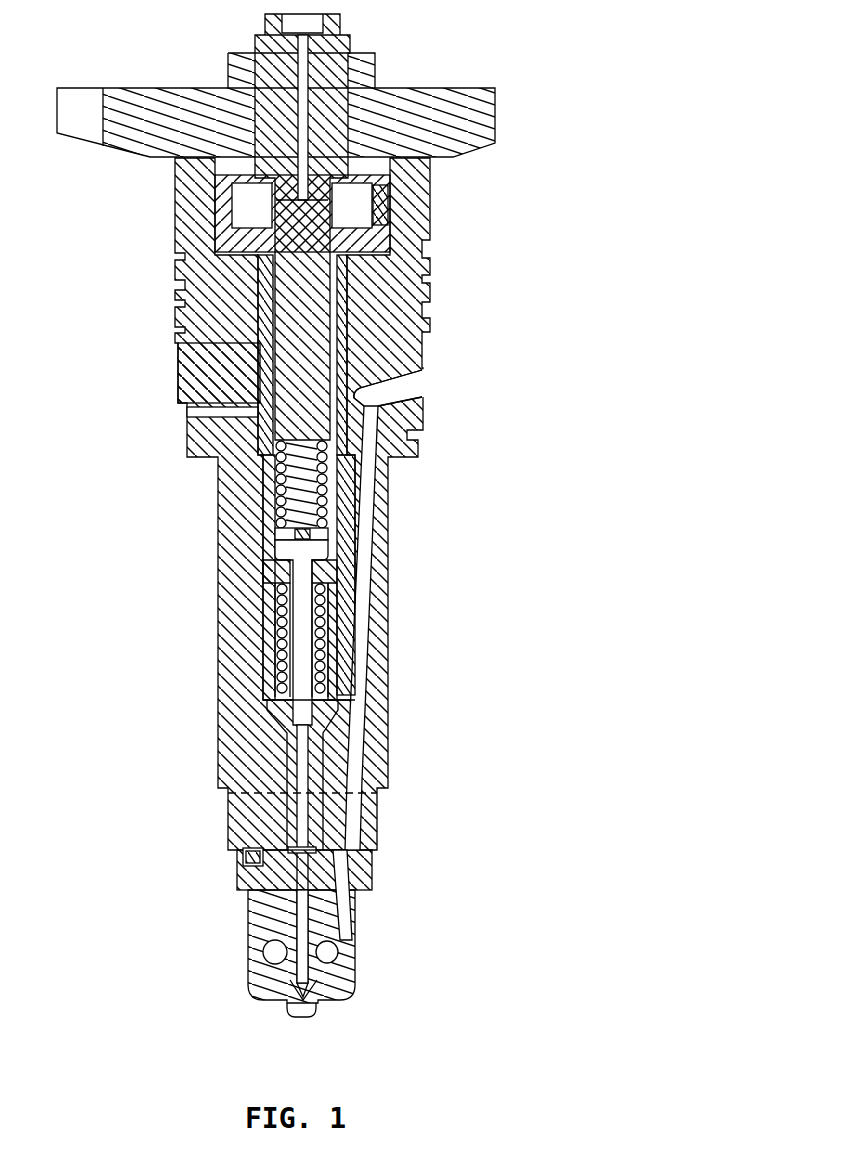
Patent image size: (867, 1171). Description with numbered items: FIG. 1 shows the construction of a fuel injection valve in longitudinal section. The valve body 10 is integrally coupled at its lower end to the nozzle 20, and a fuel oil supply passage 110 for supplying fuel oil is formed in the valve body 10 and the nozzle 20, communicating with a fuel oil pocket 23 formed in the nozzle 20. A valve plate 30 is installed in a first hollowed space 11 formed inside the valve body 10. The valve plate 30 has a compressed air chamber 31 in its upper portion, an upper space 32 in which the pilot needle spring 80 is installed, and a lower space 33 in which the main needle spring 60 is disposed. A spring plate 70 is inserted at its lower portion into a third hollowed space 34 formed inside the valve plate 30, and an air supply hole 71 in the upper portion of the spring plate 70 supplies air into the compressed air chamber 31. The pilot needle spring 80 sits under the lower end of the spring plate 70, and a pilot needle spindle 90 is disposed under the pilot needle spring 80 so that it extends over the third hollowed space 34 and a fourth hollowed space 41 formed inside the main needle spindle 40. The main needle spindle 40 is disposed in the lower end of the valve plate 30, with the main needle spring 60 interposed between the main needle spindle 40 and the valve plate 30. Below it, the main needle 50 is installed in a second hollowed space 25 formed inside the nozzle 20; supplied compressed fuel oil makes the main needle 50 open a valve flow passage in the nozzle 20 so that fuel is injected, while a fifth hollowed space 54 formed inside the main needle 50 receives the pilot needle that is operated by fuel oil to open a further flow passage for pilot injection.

The valve body 10 is at (397, 423).
The first hollowed space 11 is at (343, 530).
The nozzle 20 is at (233, 888).
The fuel oil pocket 23 is at (282, 953).
The second hollowed space 25 is at (280, 917).
The valve plate 30 is at (403, 390).
The compressed air chamber 31 is at (245, 215).
The upper space 32 is at (345, 478).
The lower space 33 is at (307, 597).
The third hollowed space 34 is at (270, 350).
The main needle spindle 40 is at (267, 703).
The fourth hollowed space 41 is at (287, 782).
The main needle 50 is at (320, 897).
The fifth hollowed space 54 is at (313, 927).
The main needle spring 60 is at (337, 647).
The spring plate 70 is at (300, 285).
The air supply hole 71 is at (387, 180).
The pilot needle spring 80 is at (190, 445).
The pilot needle spindle 90 is at (270, 587).
The fuel oil supply passage 110 is at (357, 743).